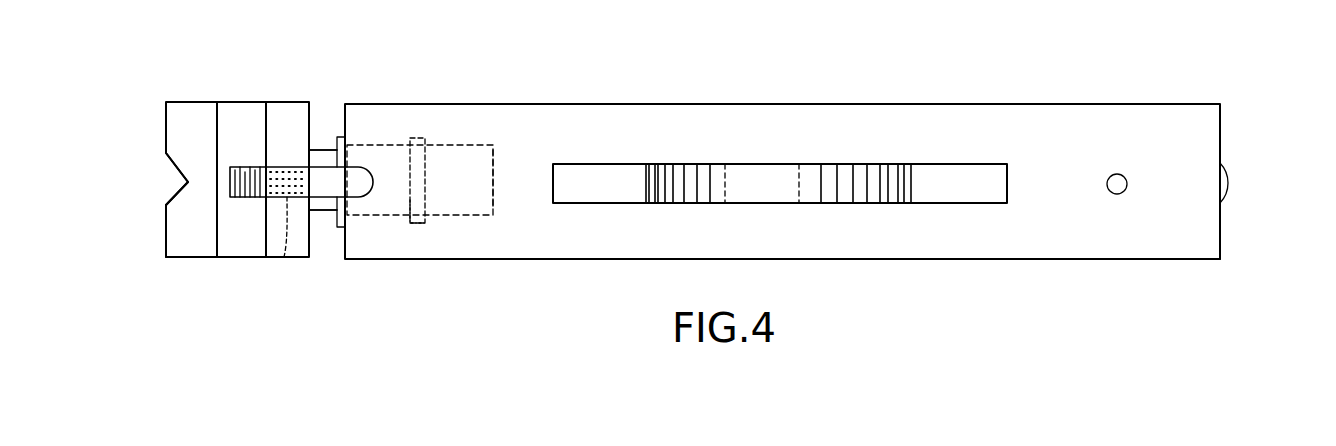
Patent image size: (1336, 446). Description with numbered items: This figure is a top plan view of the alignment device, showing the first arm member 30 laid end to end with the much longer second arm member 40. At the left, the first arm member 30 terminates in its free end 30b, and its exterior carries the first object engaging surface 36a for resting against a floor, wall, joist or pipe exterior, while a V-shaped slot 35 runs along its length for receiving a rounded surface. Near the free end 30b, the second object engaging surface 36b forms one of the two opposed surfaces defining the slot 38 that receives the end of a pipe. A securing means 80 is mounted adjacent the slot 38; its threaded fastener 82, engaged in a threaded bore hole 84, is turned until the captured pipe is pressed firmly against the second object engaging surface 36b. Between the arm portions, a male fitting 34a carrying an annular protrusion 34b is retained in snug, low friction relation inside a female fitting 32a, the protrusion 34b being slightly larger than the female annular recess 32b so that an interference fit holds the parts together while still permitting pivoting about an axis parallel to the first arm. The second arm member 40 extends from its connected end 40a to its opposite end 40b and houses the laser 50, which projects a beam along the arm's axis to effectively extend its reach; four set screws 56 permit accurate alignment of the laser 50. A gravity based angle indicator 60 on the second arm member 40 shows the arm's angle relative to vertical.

The first arm member 30 is at (182, 123).
The free end 30b is at (205, 117).
The V-shaped slot 35 is at (176, 190).
The first object engaging surface 36a is at (165, 228).
The second object engaging surface 36b is at (217, 240).
The slot 38 is at (250, 115).
The securing means 80 is at (315, 270).
The threaded fastener 82 is at (322, 180).
The threaded bore hole 84 is at (284, 258).
The female fitting 32a is at (472, 145).
The female annular recess 32b is at (415, 140).
The male fitting 34a is at (468, 193).
The annular protrusion 34b is at (412, 217).
The second arm member 40 is at (930, 130).
The connected end 40a is at (343, 250).
The bar second end 40b is at (1220, 237).
The laser 50 is at (1228, 173).
The set screws 56 is at (1117, 184).
The gravity based angle indicator 60 is at (970, 180).